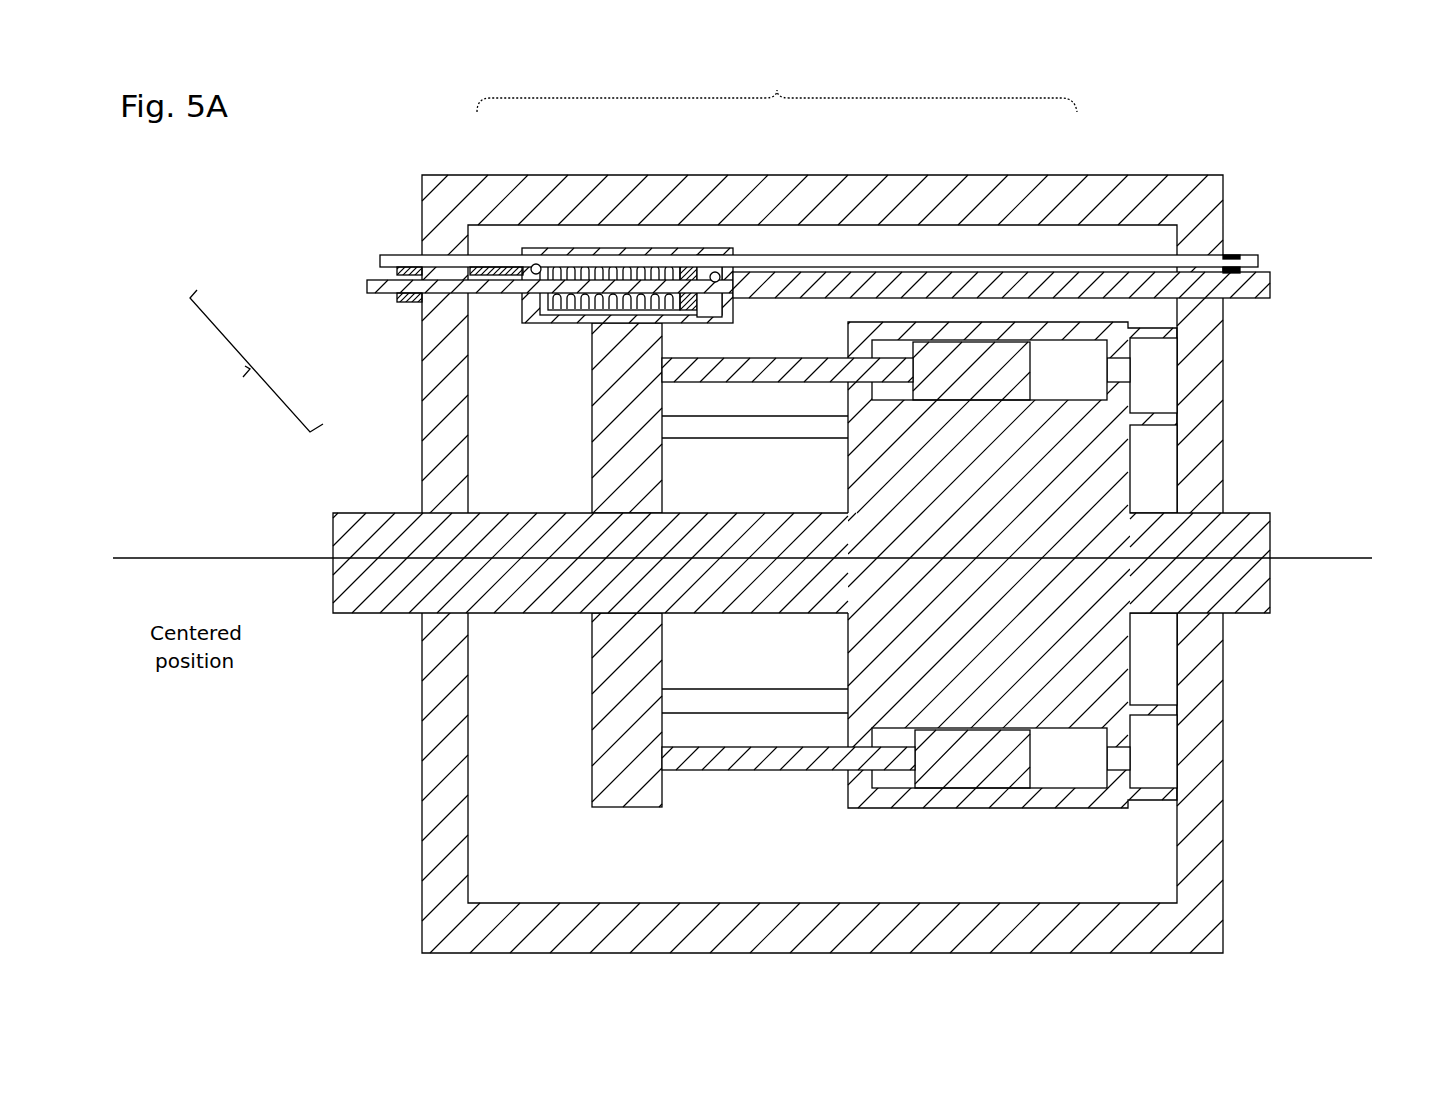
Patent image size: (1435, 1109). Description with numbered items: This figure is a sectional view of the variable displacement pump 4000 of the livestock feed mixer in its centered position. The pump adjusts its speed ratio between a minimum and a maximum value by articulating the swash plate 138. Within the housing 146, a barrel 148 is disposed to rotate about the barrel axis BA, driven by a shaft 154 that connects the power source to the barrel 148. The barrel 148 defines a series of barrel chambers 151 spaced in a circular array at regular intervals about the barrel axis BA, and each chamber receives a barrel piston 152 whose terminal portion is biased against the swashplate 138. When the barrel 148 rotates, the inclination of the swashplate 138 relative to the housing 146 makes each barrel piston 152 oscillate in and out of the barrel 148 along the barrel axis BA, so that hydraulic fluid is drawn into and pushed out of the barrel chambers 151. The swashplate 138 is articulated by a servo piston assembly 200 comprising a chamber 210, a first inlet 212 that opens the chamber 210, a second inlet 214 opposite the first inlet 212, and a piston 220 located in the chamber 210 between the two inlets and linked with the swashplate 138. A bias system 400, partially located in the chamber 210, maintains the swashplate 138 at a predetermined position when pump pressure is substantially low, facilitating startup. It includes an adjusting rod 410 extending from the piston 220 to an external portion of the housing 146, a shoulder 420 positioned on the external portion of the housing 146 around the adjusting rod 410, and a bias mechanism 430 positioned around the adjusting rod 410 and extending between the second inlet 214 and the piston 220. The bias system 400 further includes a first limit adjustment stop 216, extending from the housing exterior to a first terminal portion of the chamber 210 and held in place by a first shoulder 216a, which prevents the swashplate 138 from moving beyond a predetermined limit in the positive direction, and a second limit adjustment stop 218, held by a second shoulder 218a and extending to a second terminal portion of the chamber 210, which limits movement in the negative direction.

The housing 146 is at (418, 193).
The barrel 148 is at (873, 655).
The barrel chambers 151 is at (1108, 747).
The barrel piston 152 is at (923, 373).
The swash plate 138 is at (600, 412).
The shaft 154 is at (334, 527).
The bias mechanism 430 is at (522, 318).
The second inlet 214 is at (593, 258).
The piston 220 is at (697, 266).
The chamber 210 is at (683, 248).
The adjusting rod 410 is at (368, 288).
The first limit adjustment stop 216 is at (1027, 255).
The first shoulder 216a is at (1227, 254).
The shoulder 420 is at (408, 302).
The second limit adjustment stop 218 is at (540, 264).
The second shoulder 218a is at (470, 256).
The first inlet 212 is at (722, 272).
The bias system 400 is at (256, 361).
The servo piston assembly 200 is at (777, 89).
The variable displacement pump 4000 is at (1292, 173).
The barrel axis BA is at (1285, 557).